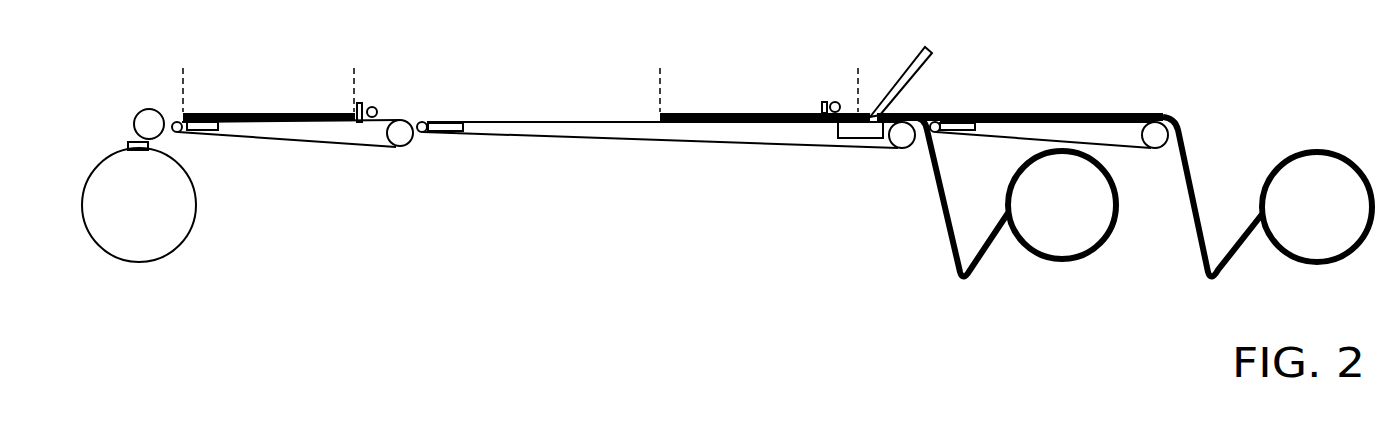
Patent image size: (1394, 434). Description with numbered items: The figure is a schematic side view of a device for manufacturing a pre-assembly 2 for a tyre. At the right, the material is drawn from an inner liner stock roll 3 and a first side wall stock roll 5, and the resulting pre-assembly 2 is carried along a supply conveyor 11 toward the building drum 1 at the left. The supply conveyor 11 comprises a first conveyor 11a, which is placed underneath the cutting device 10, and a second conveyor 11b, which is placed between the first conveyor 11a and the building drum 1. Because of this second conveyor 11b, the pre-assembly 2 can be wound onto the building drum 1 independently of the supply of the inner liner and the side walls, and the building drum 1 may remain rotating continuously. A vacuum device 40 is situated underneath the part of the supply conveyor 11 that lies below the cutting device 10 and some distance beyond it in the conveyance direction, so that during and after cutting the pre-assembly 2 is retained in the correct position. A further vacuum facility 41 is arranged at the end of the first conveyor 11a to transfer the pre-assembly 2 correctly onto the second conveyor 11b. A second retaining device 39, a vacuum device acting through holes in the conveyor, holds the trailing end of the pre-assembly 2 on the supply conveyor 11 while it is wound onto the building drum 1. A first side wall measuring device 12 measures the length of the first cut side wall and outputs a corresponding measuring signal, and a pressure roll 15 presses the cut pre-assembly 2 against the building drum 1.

The building drum 1 is at (137, 238).
The pressure roll 15 is at (148, 115).
The pre-assembly 2 is at (313, 112).
The second conveyor 11b is at (295, 140).
The second retaining device 39 is at (208, 131).
The first side wall measuring device 12 is at (374, 108).
The supply conveyor 11 is at (493, 128).
The first conveyor 11a is at (617, 140).
The further vacuum facility 41 is at (450, 123).
The vacuum device 40 is at (855, 132).
The cutting device 10 is at (928, 50).
The first side wall stock roll 5 is at (1057, 235).
The inner liner stock roll 3 is at (1313, 235).